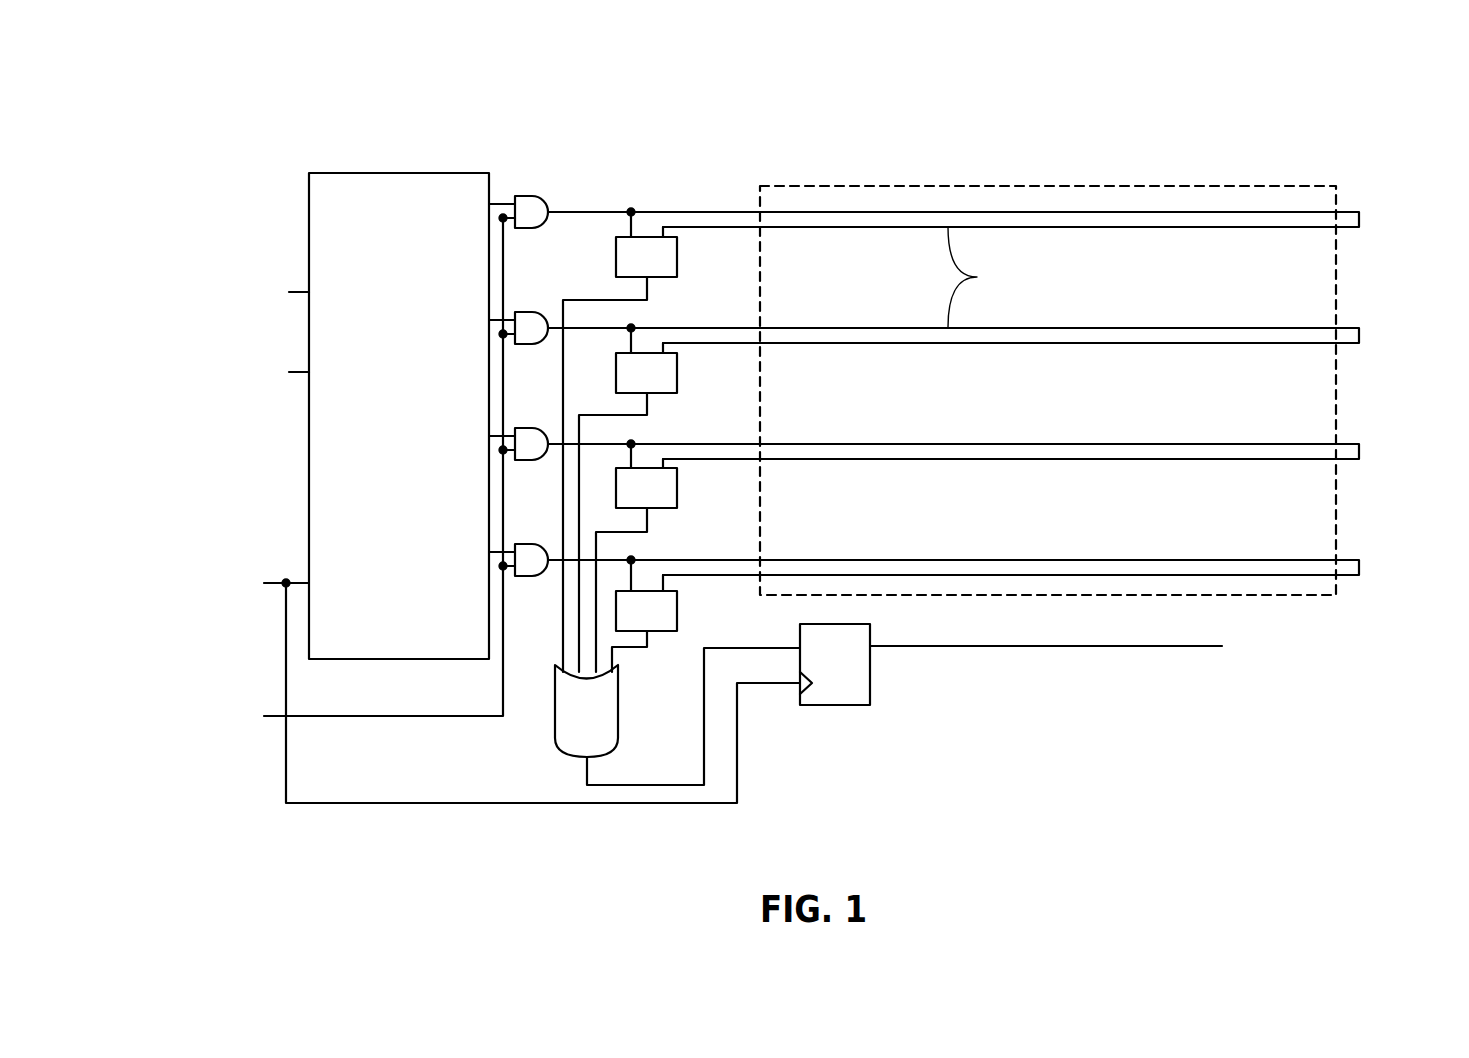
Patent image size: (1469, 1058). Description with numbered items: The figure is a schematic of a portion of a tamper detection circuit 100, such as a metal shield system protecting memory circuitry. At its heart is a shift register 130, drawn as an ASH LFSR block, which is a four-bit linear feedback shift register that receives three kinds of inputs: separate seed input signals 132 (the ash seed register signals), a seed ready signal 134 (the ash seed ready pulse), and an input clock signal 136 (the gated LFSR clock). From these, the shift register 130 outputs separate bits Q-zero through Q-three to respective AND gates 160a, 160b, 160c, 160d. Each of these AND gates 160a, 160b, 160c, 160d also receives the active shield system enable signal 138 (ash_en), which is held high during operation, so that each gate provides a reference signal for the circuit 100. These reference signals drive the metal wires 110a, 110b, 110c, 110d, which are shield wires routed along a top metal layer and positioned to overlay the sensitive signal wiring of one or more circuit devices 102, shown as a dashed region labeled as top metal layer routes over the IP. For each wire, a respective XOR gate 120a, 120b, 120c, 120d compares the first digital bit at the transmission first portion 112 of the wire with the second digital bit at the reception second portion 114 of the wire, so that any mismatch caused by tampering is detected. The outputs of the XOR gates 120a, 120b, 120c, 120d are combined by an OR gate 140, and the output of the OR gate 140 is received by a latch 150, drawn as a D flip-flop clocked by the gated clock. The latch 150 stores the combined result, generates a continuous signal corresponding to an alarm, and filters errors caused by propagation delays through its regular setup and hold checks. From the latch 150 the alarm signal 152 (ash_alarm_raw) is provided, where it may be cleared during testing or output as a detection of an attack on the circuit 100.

The tamper detection circuit 100 is at (208, 84).
The circuit device 102 is at (1012, 186).
The metal wire 110a is at (1349, 228).
The metal wire 110b is at (1349, 344).
The metal wire 110c is at (1349, 460).
The metal wire 110d is at (1349, 576).
The first portion 112 is at (630, 229).
The second portion 114 is at (703, 226).
The XOR gate 120a is at (657, 278).
The XOR gate 120b is at (657, 394).
The XOR gate 120c is at (657, 509).
The XOR gate 120d is at (677, 608).
The shift register 130 is at (309, 193).
The seed input signals 132 is at (238, 271).
The seed ready signal 134 is at (205, 399).
The input clock signal 136 is at (186, 567).
The active shield system enable signal 138 is at (193, 693).
The OR gate 140 is at (555, 727).
The latch 150 is at (870, 676).
The alarm signal 152 is at (1041, 648).
The AND gate 160a is at (543, 196).
The AND gate 160b is at (522, 312).
The AND gate 160c is at (527, 460).
The AND gate 160d is at (527, 577).